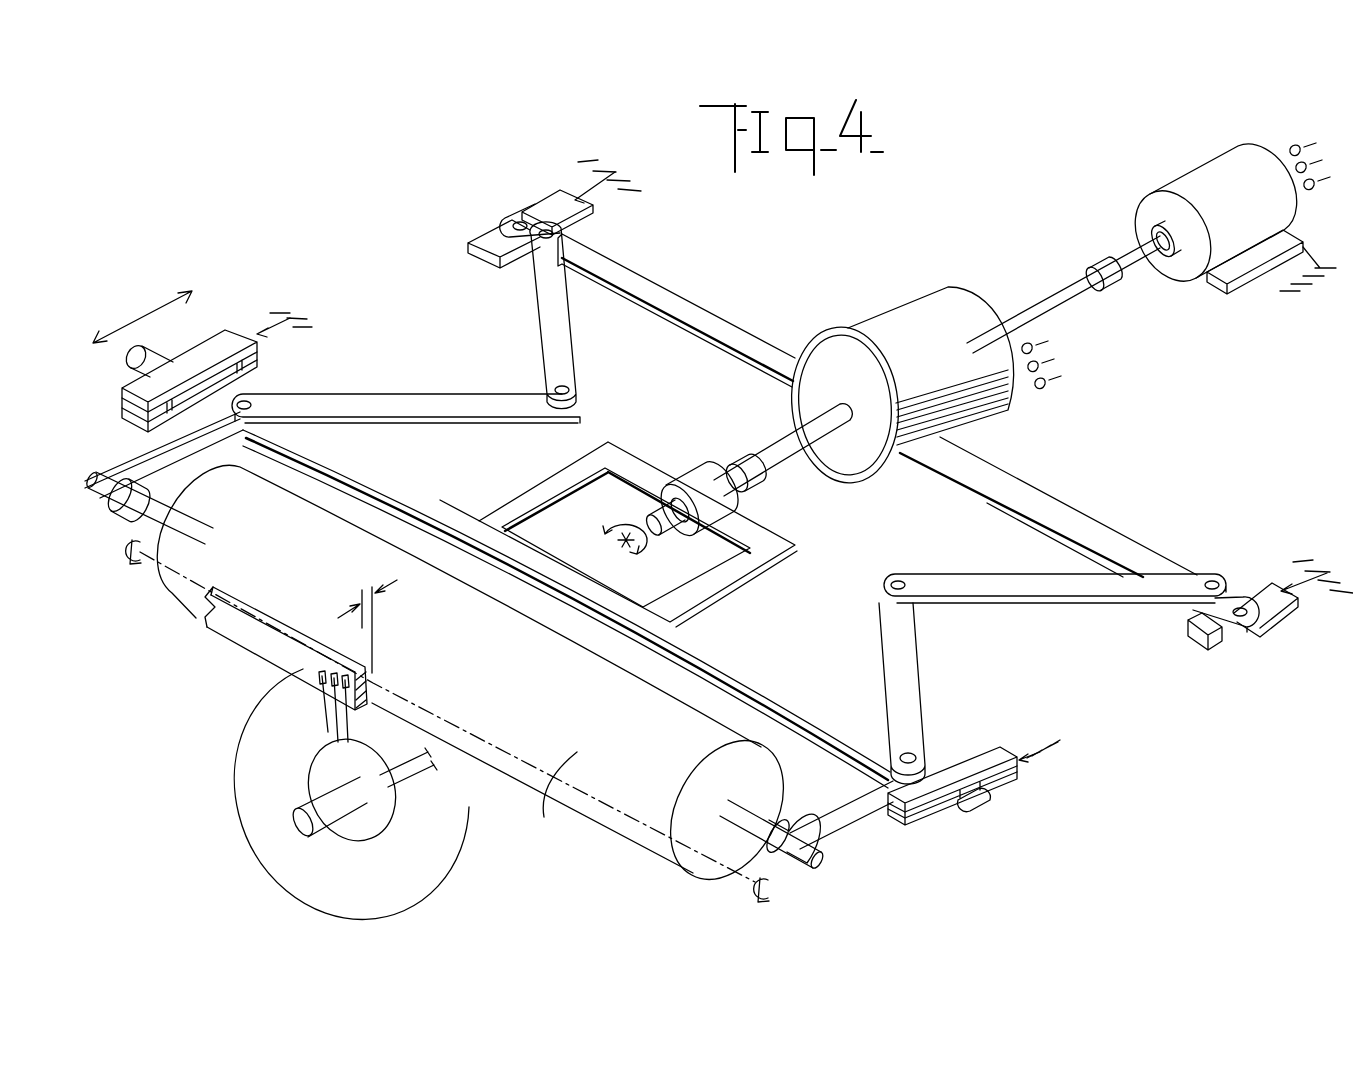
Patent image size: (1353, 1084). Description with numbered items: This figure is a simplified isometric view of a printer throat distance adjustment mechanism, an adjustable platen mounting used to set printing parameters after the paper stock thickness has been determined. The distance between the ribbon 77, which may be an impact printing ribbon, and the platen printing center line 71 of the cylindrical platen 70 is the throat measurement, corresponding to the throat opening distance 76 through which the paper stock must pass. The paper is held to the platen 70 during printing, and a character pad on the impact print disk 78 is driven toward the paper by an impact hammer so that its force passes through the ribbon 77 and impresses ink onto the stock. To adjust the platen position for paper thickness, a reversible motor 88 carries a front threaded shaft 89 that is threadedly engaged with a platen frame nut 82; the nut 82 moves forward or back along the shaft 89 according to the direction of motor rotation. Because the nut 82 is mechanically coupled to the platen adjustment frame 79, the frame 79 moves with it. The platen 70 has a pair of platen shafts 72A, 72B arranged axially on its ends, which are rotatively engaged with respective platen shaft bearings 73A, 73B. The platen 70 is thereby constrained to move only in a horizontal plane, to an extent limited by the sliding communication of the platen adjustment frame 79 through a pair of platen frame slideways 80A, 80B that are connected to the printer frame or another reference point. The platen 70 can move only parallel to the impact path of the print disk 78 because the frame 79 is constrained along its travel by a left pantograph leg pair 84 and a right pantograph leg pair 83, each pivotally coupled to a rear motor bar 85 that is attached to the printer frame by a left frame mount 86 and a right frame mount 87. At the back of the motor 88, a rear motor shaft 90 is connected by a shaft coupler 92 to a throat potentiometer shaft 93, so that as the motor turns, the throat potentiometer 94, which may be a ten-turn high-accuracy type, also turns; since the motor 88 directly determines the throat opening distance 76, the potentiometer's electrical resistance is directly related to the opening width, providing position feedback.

The cylindrical platen 70 is at (466, 683).
The platen printing center line 71 is at (620, 813).
The platen shaft 72A is at (820, 867).
The platen shaft 72B is at (100, 480).
The platen shaft bearing 73A is at (790, 866).
The platen shaft bearing 73B is at (110, 512).
The throat opening distance 76 is at (370, 633).
The ribbon 77 is at (205, 612).
The impact print disk 78 is at (283, 782).
The platen adjustment frame 79 is at (787, 687).
The platen frame slideway 80A is at (890, 833).
The platen frame slideway 80B is at (228, 338).
The platen frame nut 82 is at (688, 470).
The right pantograph leg pair 83 is at (983, 627).
The left pantograph leg pair 84 is at (527, 363).
The rear motor bar 85 is at (733, 337).
The left frame mount 86 is at (547, 202).
The right frame mount 87 is at (1280, 617).
The reversible motor 88 is at (937, 302).
The front threaded shaft 89 is at (752, 478).
The rear motor shaft 90 is at (1033, 303).
The shaft coupler 92 is at (1100, 265).
The throat potentiometer shaft 93 is at (1139, 262).
The throat potentiometer 94 is at (1250, 147).